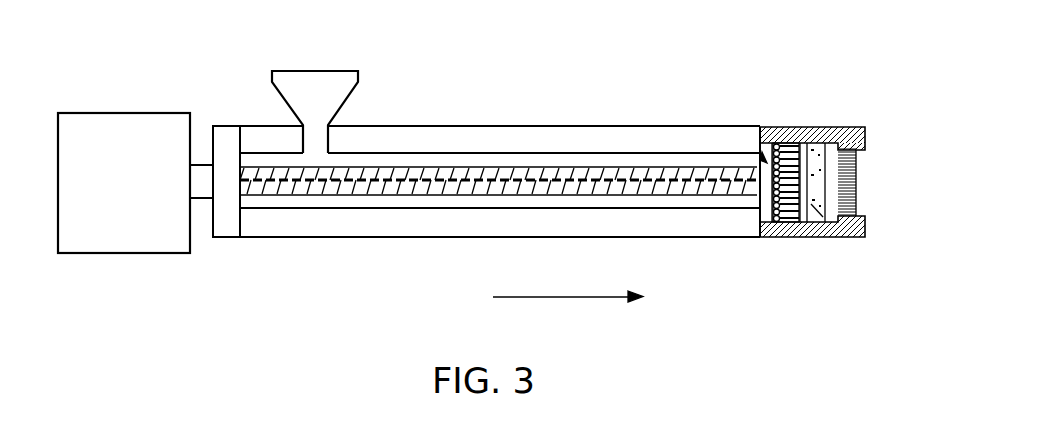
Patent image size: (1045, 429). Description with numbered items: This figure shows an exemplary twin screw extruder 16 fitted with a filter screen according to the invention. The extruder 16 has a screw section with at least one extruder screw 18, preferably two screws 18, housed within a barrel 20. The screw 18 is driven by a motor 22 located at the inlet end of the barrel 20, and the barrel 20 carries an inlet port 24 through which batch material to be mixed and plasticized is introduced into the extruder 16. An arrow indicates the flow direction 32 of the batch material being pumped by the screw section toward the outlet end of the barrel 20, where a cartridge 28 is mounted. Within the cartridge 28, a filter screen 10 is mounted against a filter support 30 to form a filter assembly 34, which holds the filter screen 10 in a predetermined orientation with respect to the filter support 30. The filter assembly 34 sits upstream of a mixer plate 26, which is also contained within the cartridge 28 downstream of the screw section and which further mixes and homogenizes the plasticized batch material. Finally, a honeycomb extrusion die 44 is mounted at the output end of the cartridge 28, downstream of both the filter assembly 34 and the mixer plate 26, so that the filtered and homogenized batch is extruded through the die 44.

The filter screen 10 is at (773, 200).
The extruder 16 is at (552, 97).
The extruder screw 18 is at (457, 177).
The barrel 20 is at (425, 223).
The motor 22 is at (127, 255).
The inlet port 24 is at (318, 68).
The mixer plate 26 is at (825, 237).
The cartridge 28 is at (833, 130).
The filter support 30 is at (792, 208).
The flow direction 32 is at (565, 303).
The filter assembly 34 is at (762, 157).
The honeycomb extrusion die 44 is at (855, 185).